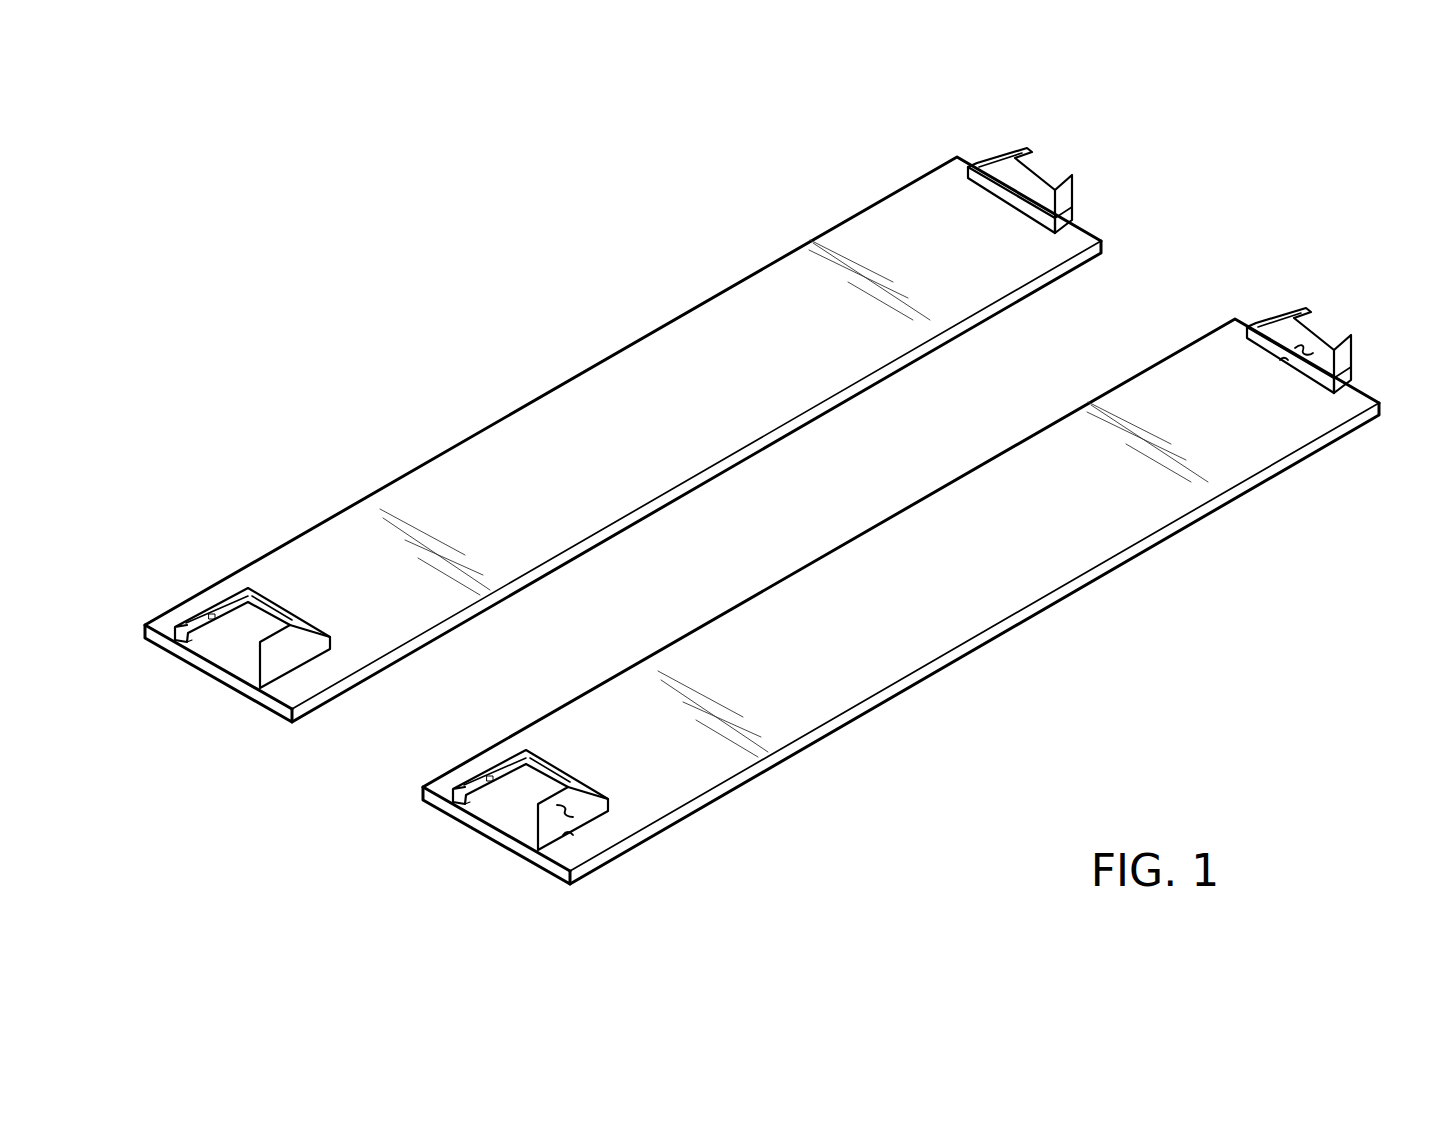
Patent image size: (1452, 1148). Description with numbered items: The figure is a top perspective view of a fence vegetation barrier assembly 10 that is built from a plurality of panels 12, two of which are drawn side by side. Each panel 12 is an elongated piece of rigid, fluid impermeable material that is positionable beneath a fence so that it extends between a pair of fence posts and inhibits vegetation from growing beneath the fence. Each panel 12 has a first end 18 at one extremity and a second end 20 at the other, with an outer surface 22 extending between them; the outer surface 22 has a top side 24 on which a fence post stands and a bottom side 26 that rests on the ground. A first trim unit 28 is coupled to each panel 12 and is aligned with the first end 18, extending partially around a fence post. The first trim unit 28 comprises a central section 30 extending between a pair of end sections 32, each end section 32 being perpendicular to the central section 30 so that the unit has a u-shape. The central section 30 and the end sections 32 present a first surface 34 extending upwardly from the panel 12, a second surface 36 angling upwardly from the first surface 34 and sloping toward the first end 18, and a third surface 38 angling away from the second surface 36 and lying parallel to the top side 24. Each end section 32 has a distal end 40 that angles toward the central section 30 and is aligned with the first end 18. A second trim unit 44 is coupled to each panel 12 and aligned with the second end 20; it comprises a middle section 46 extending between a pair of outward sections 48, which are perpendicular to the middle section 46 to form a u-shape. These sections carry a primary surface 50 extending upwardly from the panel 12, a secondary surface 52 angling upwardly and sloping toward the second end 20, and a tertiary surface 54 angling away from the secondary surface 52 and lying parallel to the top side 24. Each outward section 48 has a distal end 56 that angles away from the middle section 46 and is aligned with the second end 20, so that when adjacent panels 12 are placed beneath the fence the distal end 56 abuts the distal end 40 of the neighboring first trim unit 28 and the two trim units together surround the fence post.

The fence vegetation barrier assembly 10 is at (646, 202).
The panel 12 is at (786, 506).
The first end 18 is at (786, 506).
The second end 20 is at (1088, 233).
The outer surface 22 is at (786, 506).
The top side 24 is at (786, 506).
The bottom side 26 is at (786, 506).
The first trim unit 28 is at (441, 699).
The central section 30 is at (441, 777).
The end section 32 is at (441, 777).
The first surface 34 is at (412, 777).
The second surface 36 is at (391, 777).
The third surface 38 is at (391, 766).
The distal end 40 is at (450, 795).
The second trim unit 44 is at (1157, 303).
The middle section 46 is at (1189, 358).
The outward section 48 is at (1189, 358).
The primary surface 50 is at (1189, 358).
The secondary surface 52 is at (1189, 270).
The tertiary surface 54 is at (1189, 270).
The distal end 56 is at (1350, 338).